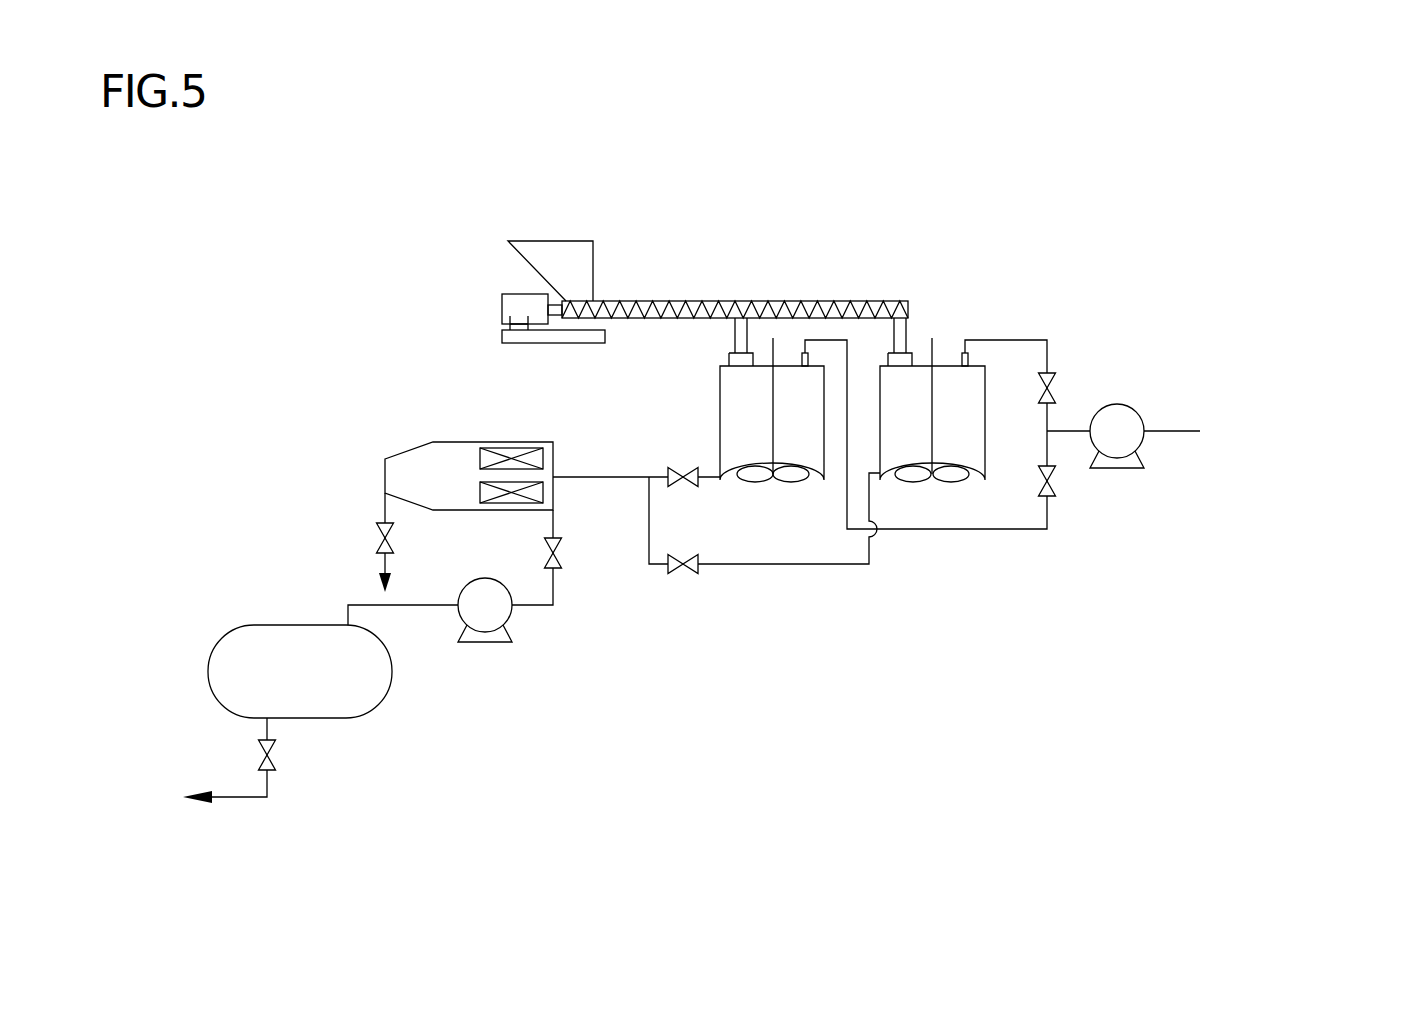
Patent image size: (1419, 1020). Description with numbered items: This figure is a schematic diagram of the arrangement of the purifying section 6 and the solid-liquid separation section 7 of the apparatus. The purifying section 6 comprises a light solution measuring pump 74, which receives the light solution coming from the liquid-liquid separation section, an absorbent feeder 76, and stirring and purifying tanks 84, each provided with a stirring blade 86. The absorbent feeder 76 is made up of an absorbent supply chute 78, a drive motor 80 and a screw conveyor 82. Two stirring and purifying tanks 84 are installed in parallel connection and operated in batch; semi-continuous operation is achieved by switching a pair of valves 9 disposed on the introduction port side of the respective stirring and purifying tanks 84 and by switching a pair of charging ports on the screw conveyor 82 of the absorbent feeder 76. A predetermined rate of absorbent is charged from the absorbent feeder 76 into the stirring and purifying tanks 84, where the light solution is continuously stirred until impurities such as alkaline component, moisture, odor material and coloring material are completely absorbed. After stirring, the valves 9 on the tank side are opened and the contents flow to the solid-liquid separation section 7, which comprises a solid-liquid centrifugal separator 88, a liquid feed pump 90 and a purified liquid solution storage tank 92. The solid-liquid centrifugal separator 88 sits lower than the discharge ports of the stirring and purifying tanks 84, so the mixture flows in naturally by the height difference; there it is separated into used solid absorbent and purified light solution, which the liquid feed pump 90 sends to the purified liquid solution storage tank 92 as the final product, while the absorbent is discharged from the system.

The purifying section 6 is at (897, 240).
The solid-liquid separation section 7 is at (346, 408).
The valves 9 is at (675, 470).
The light solution measuring pump 74 is at (1128, 405).
The absorbent feeder 76 is at (721, 272).
The absorbent supply chute 78 is at (543, 250).
The drive motor 80 is at (513, 307).
The screw conveyor 82 is at (806, 300).
The stirring and purifying tanks 84 is at (728, 384).
The stirring blade 86 is at (793, 478).
The solid-liquid centrifugal separator 88 is at (434, 453).
The liquid feed pump 90 is at (508, 620).
The purified liquid solution storage tank 92 is at (275, 645).